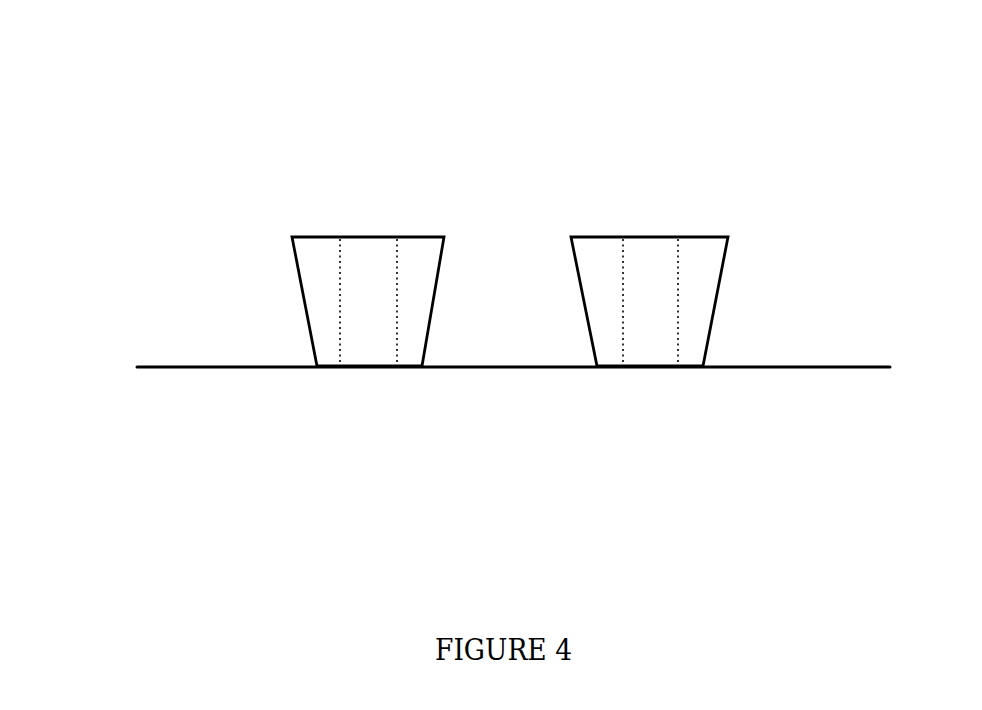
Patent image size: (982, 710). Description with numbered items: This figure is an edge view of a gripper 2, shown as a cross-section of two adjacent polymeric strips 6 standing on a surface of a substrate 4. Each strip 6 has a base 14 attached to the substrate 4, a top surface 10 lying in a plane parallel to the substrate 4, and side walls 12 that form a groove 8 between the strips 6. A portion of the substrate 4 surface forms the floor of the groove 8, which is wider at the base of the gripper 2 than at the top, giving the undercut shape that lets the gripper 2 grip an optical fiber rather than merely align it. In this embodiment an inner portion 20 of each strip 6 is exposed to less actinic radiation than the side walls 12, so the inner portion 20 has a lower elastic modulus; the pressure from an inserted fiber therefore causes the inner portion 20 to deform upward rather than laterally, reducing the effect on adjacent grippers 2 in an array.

The gripper 2 is at (172, 158).
The substrate 4 is at (192, 362).
The polymeric strips 6 is at (317, 250).
The groove 8 is at (507, 298).
The top surface 10 is at (372, 233).
The side walls 12 is at (575, 283).
The base 14 is at (370, 369).
The inner portion 20 is at (650, 273).